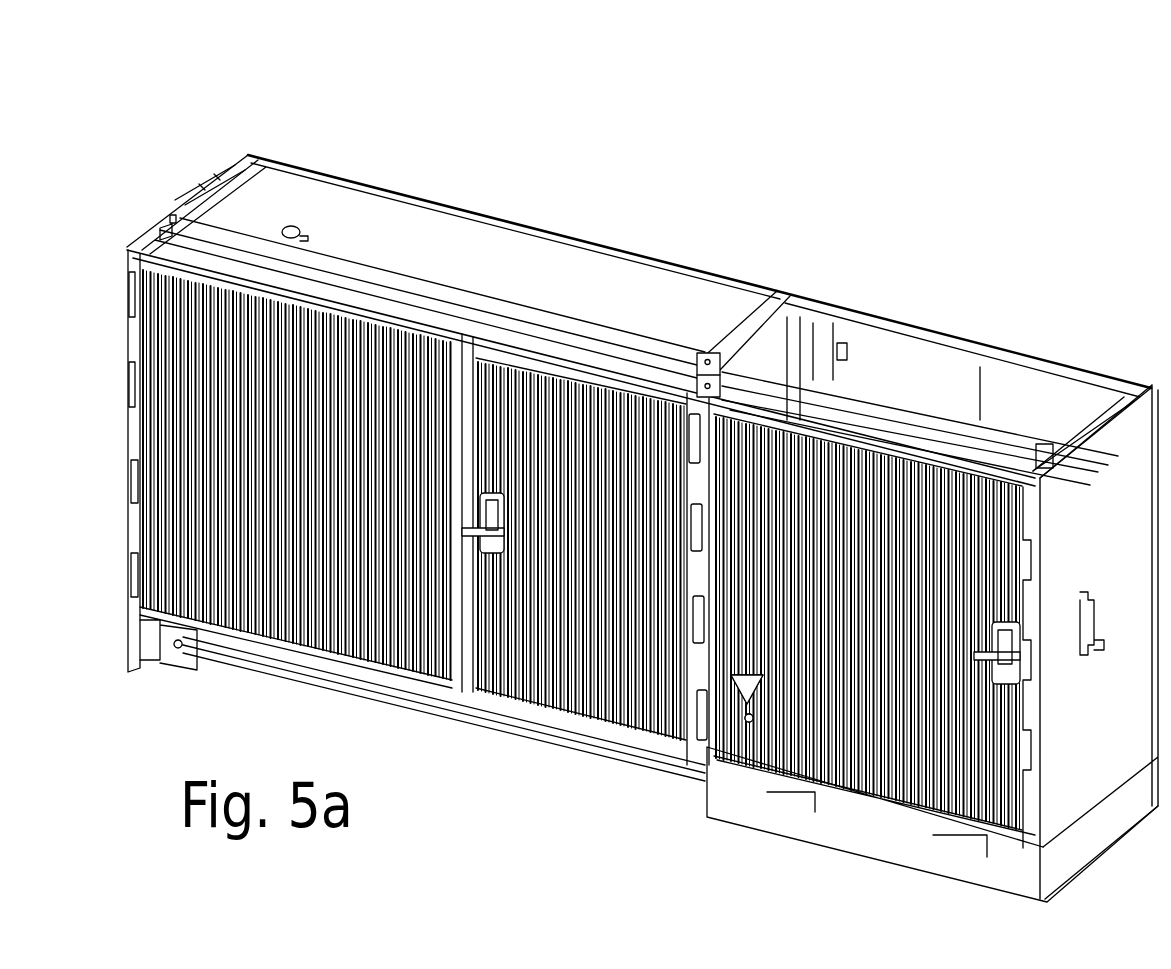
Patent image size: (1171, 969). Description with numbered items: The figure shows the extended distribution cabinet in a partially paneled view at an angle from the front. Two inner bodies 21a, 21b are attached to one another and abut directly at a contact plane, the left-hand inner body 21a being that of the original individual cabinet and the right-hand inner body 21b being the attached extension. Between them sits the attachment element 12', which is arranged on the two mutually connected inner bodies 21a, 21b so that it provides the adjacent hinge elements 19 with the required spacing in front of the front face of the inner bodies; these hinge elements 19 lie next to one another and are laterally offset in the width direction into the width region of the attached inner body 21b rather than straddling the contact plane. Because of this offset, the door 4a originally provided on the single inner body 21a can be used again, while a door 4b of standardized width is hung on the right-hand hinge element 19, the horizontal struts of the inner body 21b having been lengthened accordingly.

The inner body 21a is at (573, 180).
The inner body 21b is at (957, 274).
The attachment element 12' is at (787, 277).
The door 4a is at (574, 549).
The door 4b is at (868, 622).
The hinge element 19 is at (695, 618).